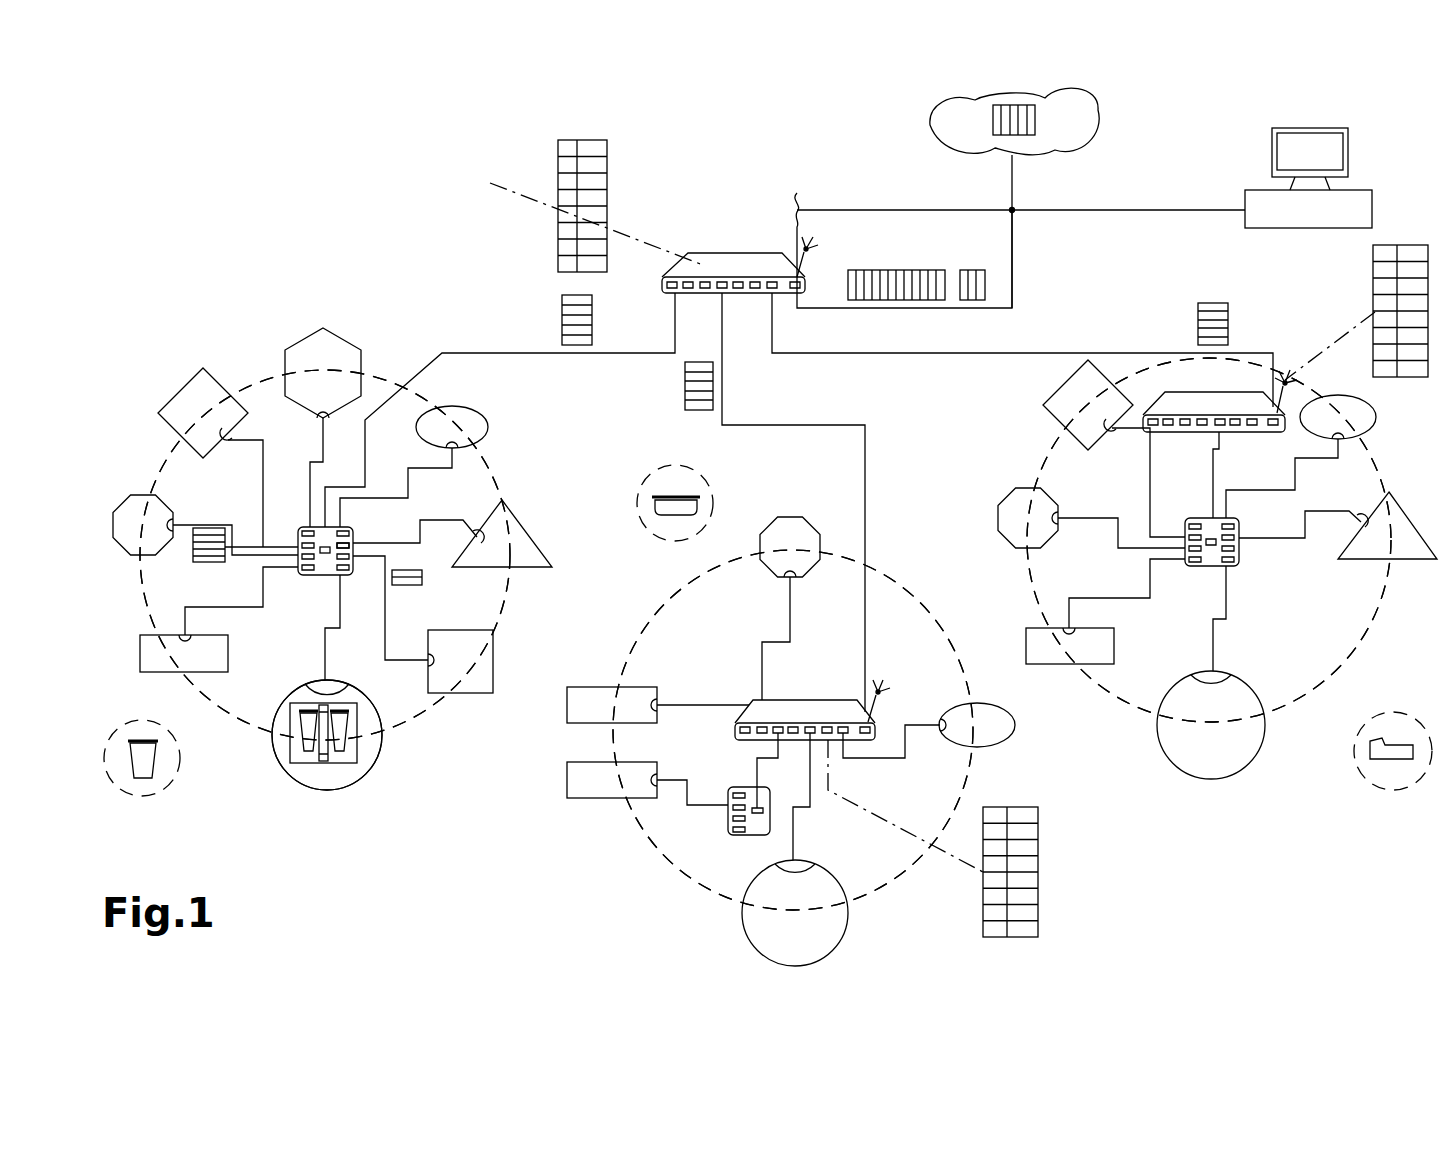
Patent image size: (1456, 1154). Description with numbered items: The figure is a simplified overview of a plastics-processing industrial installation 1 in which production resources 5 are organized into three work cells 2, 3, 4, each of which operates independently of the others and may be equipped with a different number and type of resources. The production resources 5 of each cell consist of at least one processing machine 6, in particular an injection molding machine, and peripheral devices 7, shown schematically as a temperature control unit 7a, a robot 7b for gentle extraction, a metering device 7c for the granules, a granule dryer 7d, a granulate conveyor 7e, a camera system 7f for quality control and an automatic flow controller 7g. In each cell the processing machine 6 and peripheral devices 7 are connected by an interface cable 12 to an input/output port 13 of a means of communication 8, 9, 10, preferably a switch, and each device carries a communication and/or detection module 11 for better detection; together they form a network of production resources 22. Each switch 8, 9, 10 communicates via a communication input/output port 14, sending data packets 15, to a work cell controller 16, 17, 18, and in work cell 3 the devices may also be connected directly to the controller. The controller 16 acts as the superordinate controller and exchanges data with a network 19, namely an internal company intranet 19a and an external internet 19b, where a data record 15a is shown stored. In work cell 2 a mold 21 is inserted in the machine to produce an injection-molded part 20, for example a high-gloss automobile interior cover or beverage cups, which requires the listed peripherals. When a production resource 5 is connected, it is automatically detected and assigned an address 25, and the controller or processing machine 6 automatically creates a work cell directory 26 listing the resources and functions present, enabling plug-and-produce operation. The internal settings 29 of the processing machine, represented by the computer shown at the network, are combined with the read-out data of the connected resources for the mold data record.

The industrial installation 1 is at (185, 148).
The work cell 2 is at (258, 382).
The work cell 3 is at (695, 885).
The work cell 4 is at (1112, 695).
The production resources 5 is at (405, 795).
The processing machine 6 is at (285, 745).
The peripheral device 7 is at (257, 318).
The temperature control unit 7a is at (627, 713).
The robot 7b is at (585, 532).
The metering device 7c is at (645, 409).
The granule dryer 7d is at (323, 373).
The granulate conveyor 7e is at (896, 571).
The camera system 7f is at (944, 529).
The automatic flow controller 7g is at (460, 661).
The means of communication 8 is at (327, 565).
The means of communication 9 is at (758, 822).
The means of communication 10 is at (1210, 558).
The communication and/or detection module 11 is at (327, 687).
The interface cable 12 is at (263, 498).
The input/output port 13 is at (342, 543).
The communication input/output port 14 is at (323, 548).
The data packets 15 is at (575, 318).
The cloud data memory 15a is at (1018, 120).
The work cell controller 16 is at (703, 265).
The work cell controller 17 is at (690, 287).
The work cell controller 18 is at (790, 272).
The network 19 is at (1143, 152).
The intranet 19a is at (908, 208).
The internet 19b is at (960, 125).
The injection-molded part 20 is at (142, 773).
The mold 21 is at (348, 752).
The network of production resources 22 is at (262, 685).
The address 25 is at (1377, 283).
The work cell directory 26 is at (580, 143).
The internal settings 29 is at (1308, 150).